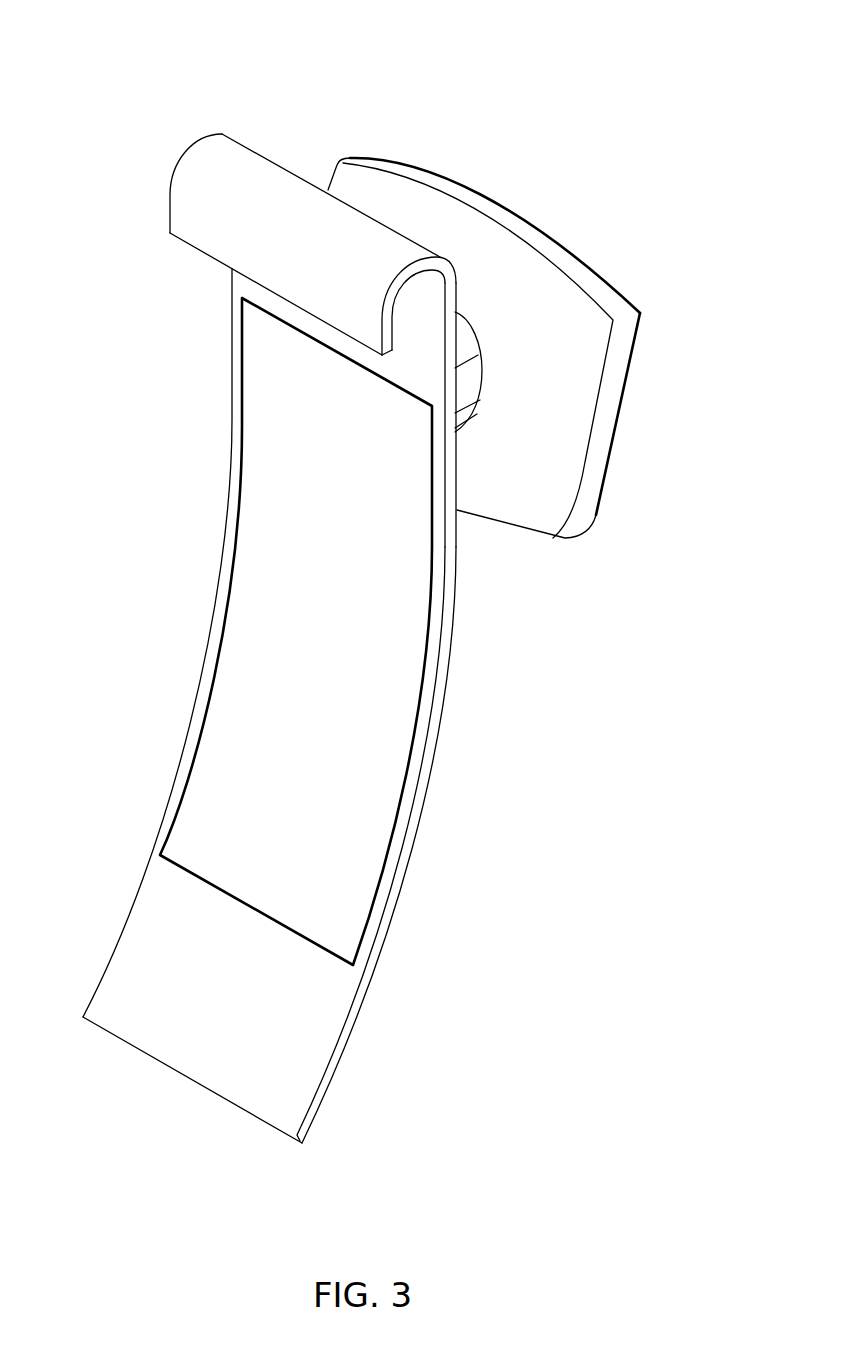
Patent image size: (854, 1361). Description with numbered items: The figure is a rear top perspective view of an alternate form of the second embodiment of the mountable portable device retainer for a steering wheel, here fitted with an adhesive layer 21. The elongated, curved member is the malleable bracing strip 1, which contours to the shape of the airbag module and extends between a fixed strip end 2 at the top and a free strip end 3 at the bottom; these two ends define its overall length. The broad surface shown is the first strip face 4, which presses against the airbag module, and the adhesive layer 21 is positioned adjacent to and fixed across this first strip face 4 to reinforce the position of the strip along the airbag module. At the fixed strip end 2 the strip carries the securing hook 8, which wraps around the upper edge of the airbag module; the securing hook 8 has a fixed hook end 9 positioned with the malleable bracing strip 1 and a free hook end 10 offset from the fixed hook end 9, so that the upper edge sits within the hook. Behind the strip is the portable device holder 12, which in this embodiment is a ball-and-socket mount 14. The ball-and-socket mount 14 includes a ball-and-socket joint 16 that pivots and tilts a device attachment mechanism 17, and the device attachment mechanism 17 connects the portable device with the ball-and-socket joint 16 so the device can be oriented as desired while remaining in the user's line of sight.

The malleable bracing strip 1 is at (330, 1133).
The fixed strip end 2 is at (452, 328).
The free strip end 3 is at (217, 1088).
The first strip face 4 is at (128, 930).
The securing hook 8 is at (221, 118).
The fixed hook end 9 is at (448, 318).
The free hook end 10 is at (175, 223).
The portable device holder 12 is at (440, 152).
The ball-and-socket mount 14 is at (470, 168).
The ball-and-socket joint 16 is at (473, 386).
The device attachment mechanism 17 is at (655, 316).
The adhesive layer 21 is at (218, 690).